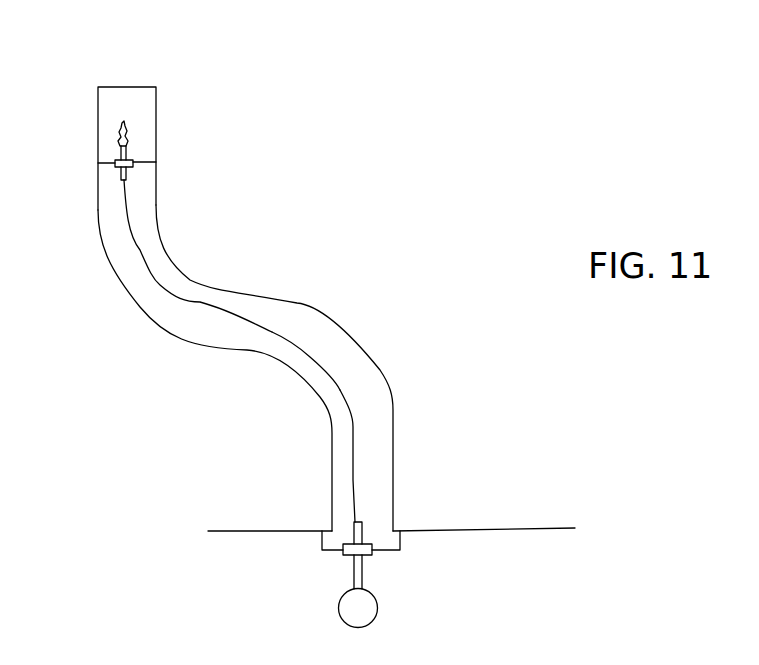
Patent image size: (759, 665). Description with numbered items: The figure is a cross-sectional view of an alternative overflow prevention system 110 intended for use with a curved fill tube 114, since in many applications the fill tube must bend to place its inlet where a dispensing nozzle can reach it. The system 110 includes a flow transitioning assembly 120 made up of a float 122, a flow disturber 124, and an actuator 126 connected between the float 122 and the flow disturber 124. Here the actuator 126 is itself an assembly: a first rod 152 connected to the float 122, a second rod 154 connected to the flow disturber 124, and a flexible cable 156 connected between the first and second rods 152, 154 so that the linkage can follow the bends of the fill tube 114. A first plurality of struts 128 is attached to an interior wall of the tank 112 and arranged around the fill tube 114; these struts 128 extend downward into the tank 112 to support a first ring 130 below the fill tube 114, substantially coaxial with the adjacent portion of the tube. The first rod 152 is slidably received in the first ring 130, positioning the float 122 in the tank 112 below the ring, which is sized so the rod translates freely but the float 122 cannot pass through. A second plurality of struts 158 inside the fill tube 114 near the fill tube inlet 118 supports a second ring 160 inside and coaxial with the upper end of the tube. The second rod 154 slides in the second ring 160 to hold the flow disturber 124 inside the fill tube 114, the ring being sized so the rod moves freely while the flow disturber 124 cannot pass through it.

The overflow prevention system 110 is at (327, 251).
The tank 112 is at (562, 528).
The curved fill tube 114 is at (393, 412).
The fill tube inlet 118 is at (108, 87).
The flow transitioning assembly 120 is at (160, 285).
The float 122 is at (380, 608).
The flow disturber 124 is at (128, 136).
The actuator 126 is at (356, 478).
The first plurality of struts 128 is at (325, 552).
The first ring 130 is at (370, 557).
The first rod 152 is at (350, 568).
The second rod 154 is at (115, 170).
The flexible cable 156 is at (272, 332).
The second plurality of struts 158 is at (100, 157).
The second ring 160 is at (113, 158).